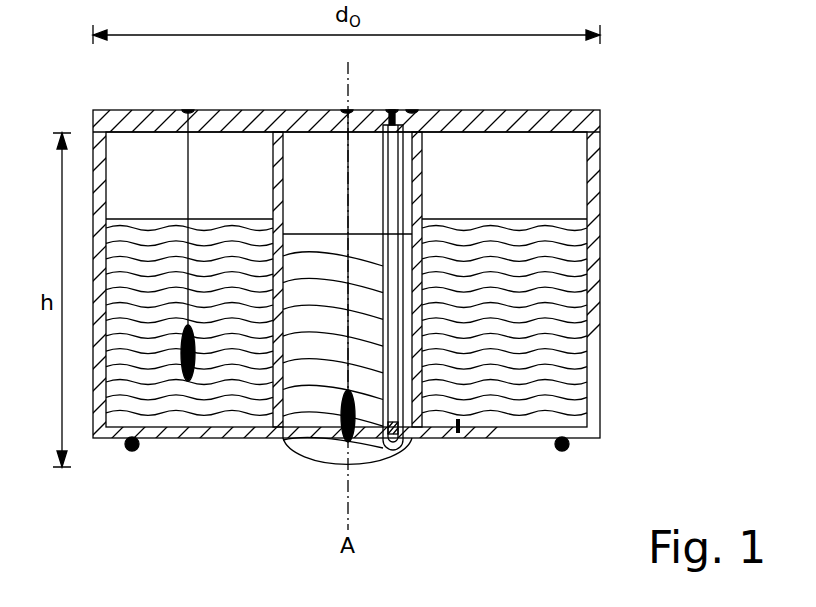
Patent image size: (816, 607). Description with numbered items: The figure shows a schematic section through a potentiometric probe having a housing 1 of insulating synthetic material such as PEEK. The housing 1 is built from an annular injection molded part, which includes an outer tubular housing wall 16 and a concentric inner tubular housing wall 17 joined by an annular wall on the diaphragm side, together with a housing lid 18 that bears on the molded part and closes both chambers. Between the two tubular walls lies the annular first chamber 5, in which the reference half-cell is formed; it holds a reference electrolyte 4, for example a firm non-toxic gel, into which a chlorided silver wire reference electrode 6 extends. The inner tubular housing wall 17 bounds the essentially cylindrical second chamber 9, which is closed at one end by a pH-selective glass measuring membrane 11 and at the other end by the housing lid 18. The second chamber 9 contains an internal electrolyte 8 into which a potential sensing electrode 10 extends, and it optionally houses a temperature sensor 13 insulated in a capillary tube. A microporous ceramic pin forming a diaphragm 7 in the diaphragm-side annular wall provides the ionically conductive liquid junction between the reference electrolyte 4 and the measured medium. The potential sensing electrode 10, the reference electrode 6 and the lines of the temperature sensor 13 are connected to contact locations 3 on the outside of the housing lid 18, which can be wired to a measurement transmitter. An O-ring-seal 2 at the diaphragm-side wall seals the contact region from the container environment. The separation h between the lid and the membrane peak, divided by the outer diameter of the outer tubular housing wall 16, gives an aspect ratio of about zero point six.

The housing 1 is at (597, 152).
The O-ring-seal 2 is at (562, 451).
The contact locations 3 is at (188, 110).
The reference electrolyte 4 is at (568, 318).
The first chamber 5 is at (566, 190).
The reference electrode 6 is at (188, 383).
The diaphragm 7 is at (458, 434).
The internal electrolyte 8 is at (353, 456).
The second chamber 9 is at (408, 158).
The potential sensing electrode 10 is at (353, 432).
The measuring membrane 11 is at (316, 466).
The temperature sensor 13 is at (396, 433).
The outer tubular housing wall 16 is at (597, 375).
The inner tubular housing wall 17 is at (274, 405).
The housing lid 18 is at (302, 128).